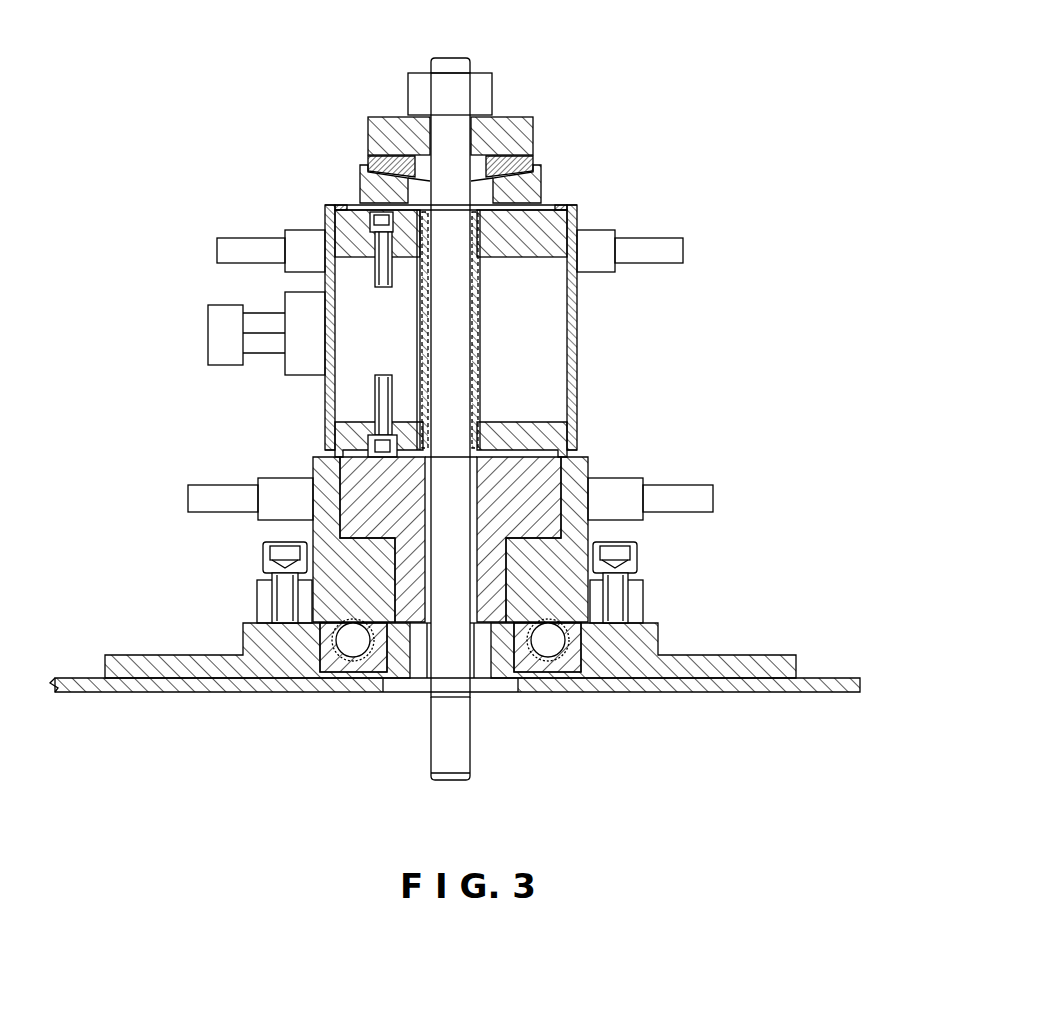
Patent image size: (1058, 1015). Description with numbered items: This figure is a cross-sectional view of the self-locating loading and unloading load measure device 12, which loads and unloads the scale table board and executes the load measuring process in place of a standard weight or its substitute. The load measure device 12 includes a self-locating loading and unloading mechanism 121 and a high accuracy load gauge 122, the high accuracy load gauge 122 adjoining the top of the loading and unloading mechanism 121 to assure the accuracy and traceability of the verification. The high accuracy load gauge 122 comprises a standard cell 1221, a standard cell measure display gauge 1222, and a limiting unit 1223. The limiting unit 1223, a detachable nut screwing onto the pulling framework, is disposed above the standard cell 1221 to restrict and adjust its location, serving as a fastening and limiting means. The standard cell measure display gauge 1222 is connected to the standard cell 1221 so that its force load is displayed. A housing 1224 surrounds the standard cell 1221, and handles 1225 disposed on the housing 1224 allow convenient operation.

The loading and unloading load measure device 12 is at (455, 392).
The self-locating loading and unloading mechanism 121 is at (372, 511).
The high accuracy load gauge 122 is at (367, 273).
The standard cell 1221 is at (367, 320).
The standard cell measure display gauge 1222 is at (222, 343).
The limiting unit 1223 is at (423, 90).
The housing 1224 is at (325, 420).
The handles 1225 is at (233, 247).